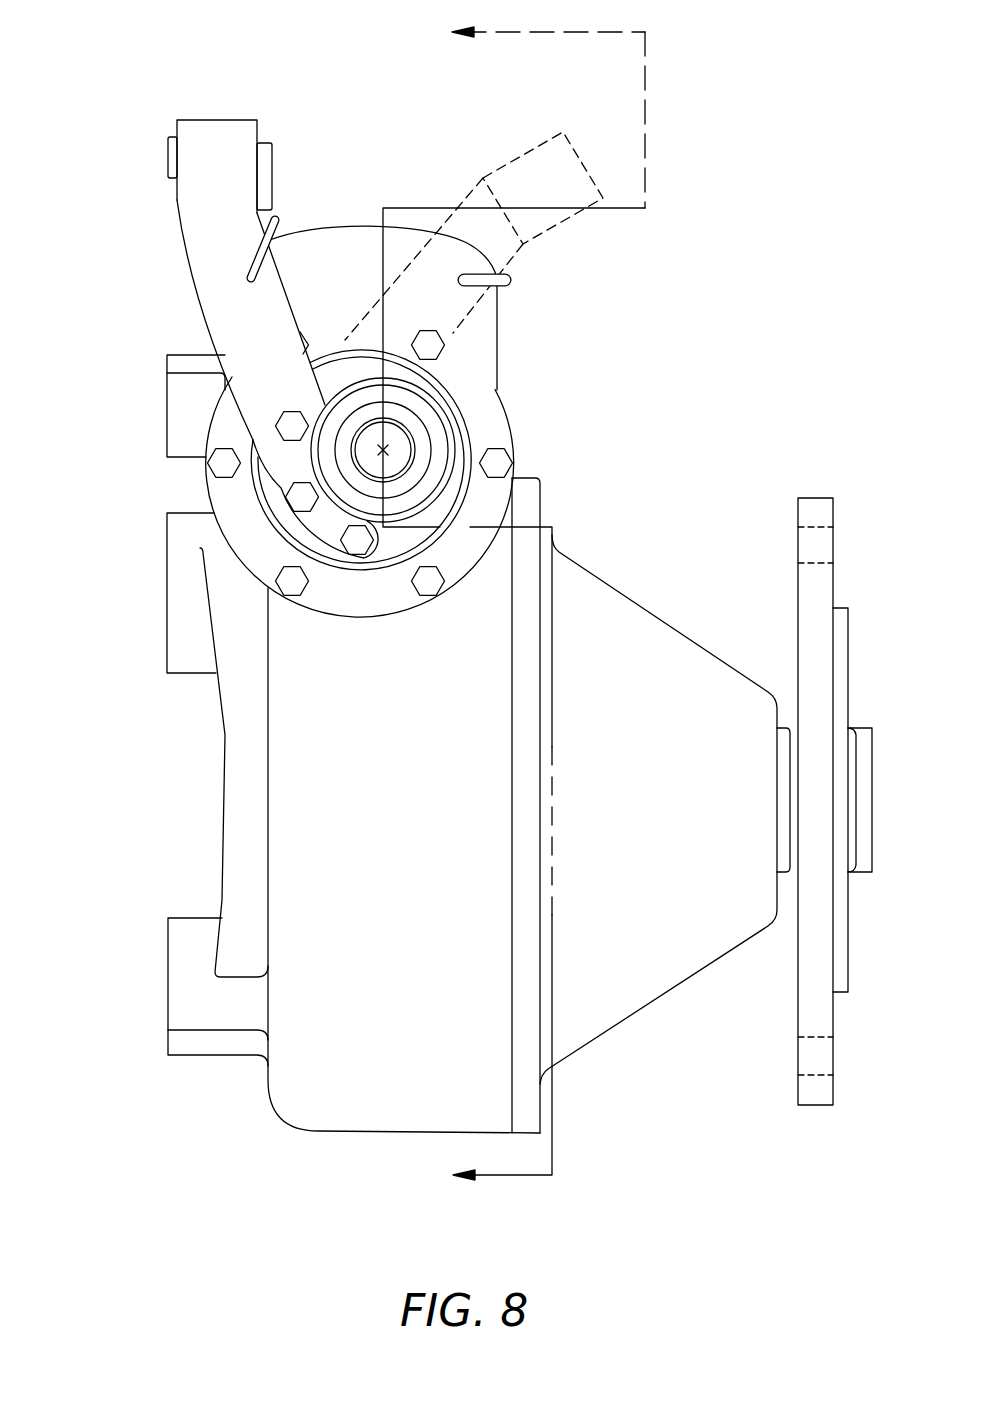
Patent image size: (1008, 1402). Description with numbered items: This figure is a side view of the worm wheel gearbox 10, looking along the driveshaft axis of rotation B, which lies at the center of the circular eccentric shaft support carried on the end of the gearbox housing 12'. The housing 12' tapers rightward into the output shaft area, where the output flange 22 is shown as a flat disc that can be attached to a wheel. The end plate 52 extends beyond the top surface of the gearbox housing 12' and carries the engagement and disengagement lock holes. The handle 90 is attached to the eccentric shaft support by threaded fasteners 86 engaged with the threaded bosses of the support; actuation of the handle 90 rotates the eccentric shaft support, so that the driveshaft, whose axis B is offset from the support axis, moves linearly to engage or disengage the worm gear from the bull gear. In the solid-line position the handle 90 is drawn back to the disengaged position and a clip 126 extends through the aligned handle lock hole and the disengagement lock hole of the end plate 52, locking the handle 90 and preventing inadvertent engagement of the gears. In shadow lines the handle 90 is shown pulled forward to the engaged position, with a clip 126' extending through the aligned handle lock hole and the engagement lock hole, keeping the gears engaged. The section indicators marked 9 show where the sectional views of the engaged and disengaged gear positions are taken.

The worm wheel gearbox 10 is at (735, 72).
The gearbox housing 12' is at (472, 793).
The output flange 22 is at (812, 502).
The end plate 52 is at (353, 250).
The threaded fastener 86 is at (357, 544).
The handle 90 is at (220, 130).
The clip 126 is at (175, 242).
The clip 126' is at (543, 303).
The driveshaft axis of rotation B is at (385, 448).
The section line 9- 9 is at (514, 609).